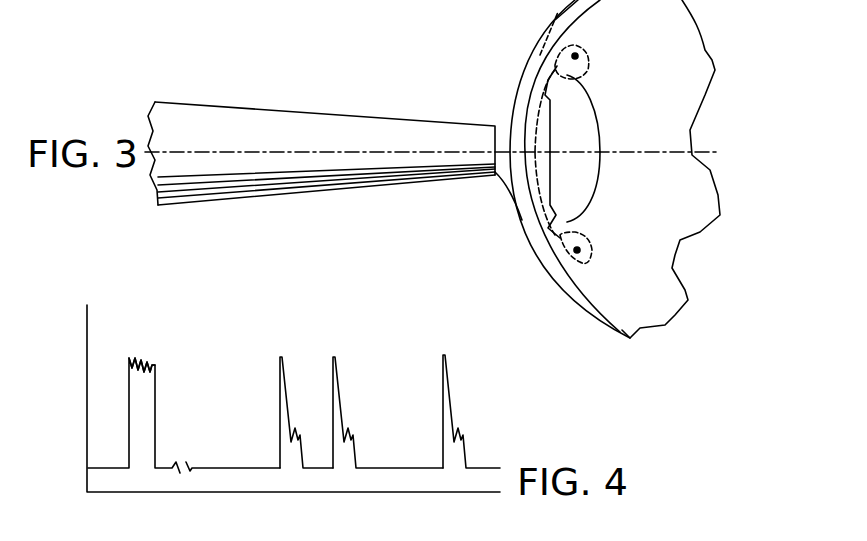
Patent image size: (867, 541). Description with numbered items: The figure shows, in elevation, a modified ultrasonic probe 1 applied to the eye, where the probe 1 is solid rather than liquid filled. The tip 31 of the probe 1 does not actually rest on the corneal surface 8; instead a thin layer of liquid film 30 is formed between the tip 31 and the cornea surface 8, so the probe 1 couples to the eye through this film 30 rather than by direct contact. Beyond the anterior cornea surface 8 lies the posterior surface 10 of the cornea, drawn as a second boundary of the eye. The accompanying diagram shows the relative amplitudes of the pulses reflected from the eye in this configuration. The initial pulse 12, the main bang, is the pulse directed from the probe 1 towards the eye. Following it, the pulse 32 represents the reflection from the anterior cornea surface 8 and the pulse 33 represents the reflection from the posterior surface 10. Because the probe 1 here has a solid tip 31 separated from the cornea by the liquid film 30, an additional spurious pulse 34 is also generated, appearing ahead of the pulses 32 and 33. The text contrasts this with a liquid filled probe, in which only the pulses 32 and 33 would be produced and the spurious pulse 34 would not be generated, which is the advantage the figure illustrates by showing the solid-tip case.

In FIG. 3, the probe 1 is at (219, 108).
In FIG. 3, the corneal surface 8 is at (522, 92).
In FIG. 3, the posterior surface 10 is at (531, 220).
In FIG. 4, the pulse 12 is at (143, 415).
In FIG. 3, the liquid film 30 is at (503, 125).
In FIG. 3, the tip 31 is at (493, 178).
In FIG. 4, the pulse 32 is at (342, 393).
In FIG. 4, the pulse 33 is at (452, 381).
In FIG. 4, the spurious pulse 34 is at (287, 390).